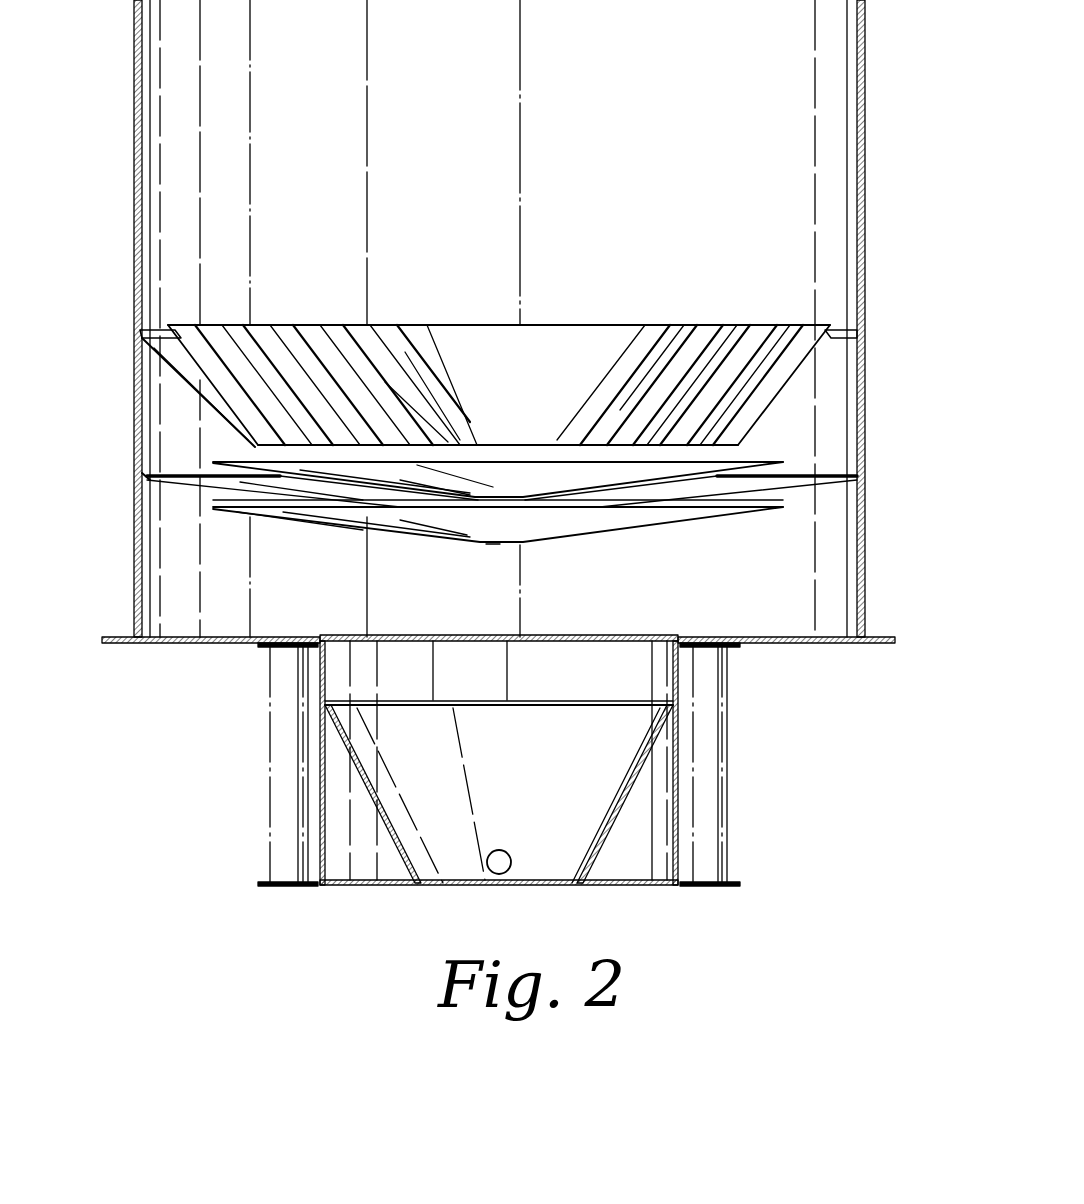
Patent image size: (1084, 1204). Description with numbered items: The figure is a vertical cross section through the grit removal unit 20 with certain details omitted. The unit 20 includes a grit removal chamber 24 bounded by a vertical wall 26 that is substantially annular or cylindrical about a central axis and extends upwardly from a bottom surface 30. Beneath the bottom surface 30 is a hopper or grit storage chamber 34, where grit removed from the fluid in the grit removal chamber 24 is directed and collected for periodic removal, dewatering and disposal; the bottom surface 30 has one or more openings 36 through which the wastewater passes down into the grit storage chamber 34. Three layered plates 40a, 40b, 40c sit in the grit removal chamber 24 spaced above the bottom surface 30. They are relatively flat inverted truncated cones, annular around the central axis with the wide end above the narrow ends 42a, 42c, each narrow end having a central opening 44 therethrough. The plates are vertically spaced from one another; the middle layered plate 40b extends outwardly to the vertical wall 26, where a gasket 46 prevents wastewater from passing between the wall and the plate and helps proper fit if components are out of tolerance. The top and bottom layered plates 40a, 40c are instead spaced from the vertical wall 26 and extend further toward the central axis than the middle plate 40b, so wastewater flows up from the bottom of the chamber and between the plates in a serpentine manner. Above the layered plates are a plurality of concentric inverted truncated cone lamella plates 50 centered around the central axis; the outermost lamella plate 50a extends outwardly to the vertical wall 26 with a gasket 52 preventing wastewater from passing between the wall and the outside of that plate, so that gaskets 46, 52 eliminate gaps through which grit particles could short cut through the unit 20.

The grit removal unit 20 is at (888, 220).
The grit removal chamber 24 is at (760, 113).
The vertical wall 26 is at (134, 200).
The bottom surface 30 is at (183, 645).
The grit storage chamber 34 is at (600, 787).
The opening 36 is at (528, 637).
The top layered plate 40a is at (765, 510).
The middle layered plate 40b is at (848, 478).
The bottom layered plate 40c is at (765, 462).
The narrow end of top layered plate 42a is at (478, 543).
The narrow end of bottom layered plate 42c is at (512, 497).
The central opening 44 is at (493, 550).
The gasket 46 is at (143, 480).
The lamella plates 50 is at (315, 330).
The outermost lamella plate 50a is at (182, 362).
The gasket 52 is at (857, 330).